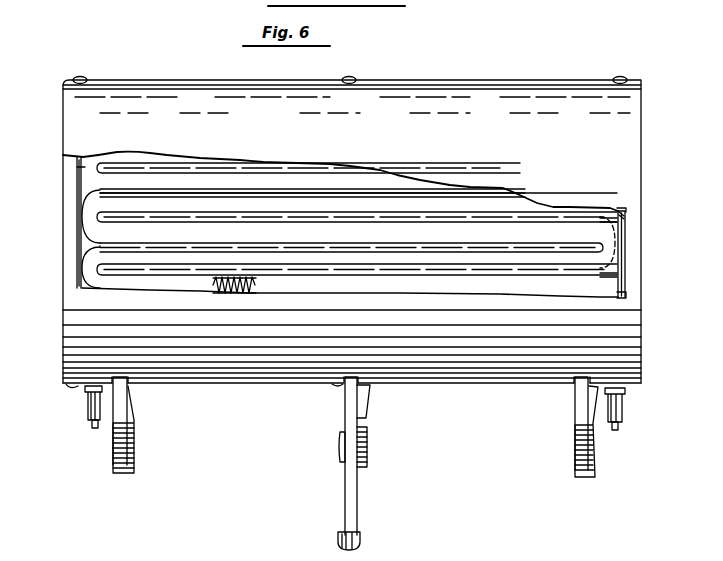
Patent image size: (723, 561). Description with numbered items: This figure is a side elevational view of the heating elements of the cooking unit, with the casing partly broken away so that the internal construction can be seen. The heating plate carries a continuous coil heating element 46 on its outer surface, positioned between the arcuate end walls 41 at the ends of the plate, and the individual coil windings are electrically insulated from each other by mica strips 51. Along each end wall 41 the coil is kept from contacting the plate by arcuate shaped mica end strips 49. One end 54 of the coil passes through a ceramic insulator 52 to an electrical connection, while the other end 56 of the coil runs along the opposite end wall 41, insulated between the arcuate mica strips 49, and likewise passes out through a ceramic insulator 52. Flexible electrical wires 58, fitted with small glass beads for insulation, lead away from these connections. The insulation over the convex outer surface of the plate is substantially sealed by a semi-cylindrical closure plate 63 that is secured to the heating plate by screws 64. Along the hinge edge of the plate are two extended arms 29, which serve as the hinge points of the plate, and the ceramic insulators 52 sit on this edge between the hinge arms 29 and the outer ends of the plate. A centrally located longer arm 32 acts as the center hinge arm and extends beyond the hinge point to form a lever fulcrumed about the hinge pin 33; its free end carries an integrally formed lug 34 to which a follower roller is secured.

The extended arms 29 is at (125, 446).
The longer arms 32 is at (354, 500).
The hinge pin 33 is at (367, 441).
The lugs 34 is at (361, 541).
The arcuate end walls 41 is at (73, 207).
The continuous coil heating element 46 is at (82, 170).
The arcuate shaped mica end strips 49 is at (78, 253).
The mica strips 51 is at (146, 165).
The ceramic insulators 52 is at (90, 408).
The end of coil 54 is at (95, 425).
The other end of coil 56 is at (632, 206).
The flexible electrical wires 58 is at (628, 297).
The semi-cylindrical closure plate 63 is at (70, 118).
The screws 64 is at (86, 64).